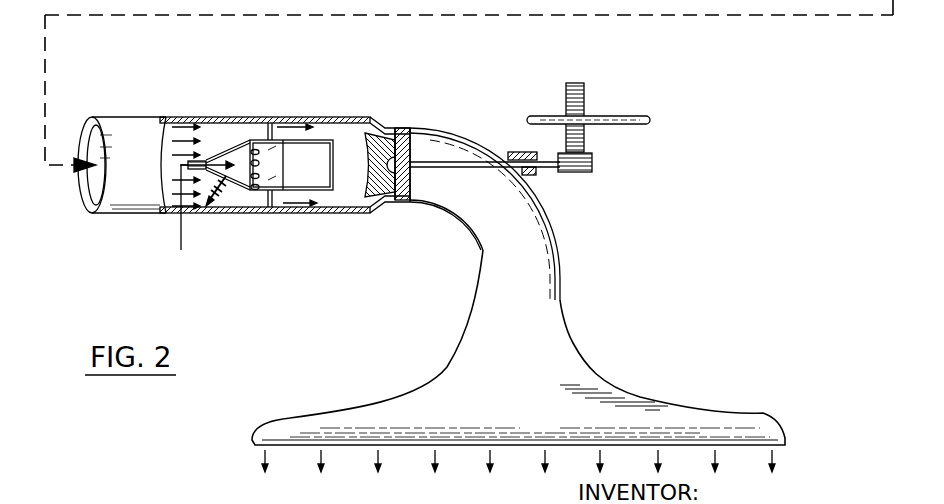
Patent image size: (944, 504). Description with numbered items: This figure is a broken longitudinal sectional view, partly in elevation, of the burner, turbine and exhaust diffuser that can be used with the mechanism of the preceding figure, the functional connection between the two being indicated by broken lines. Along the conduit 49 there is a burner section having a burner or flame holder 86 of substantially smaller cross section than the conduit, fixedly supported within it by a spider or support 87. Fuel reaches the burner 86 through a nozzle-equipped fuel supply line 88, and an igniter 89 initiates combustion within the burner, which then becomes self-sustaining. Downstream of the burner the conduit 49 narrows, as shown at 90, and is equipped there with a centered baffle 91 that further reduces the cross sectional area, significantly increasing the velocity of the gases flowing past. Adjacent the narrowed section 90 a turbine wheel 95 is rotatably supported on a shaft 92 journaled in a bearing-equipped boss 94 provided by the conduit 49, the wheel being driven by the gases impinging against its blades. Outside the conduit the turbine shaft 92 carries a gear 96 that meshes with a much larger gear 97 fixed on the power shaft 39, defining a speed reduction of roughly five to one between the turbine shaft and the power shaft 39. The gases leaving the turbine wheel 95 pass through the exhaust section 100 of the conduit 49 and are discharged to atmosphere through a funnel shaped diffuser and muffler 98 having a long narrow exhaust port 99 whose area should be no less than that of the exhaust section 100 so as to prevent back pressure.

The power shaft 39 is at (540, 117).
The conduit 49 is at (125, 130).
The burner 86 is at (233, 140).
The spider 87 is at (270, 124).
The fuel supply line 88 is at (181, 238).
The igniter 89 is at (222, 198).
The narrowed section 90 is at (400, 128).
The centered baffle 91 is at (380, 210).
The turbine shaft 92 is at (468, 136).
The bearing-equipped boss 94 is at (538, 172).
The turbine wheel 95 is at (410, 130).
The gear 96 is at (592, 166).
The gear 97 is at (586, 100).
The diffuser and muffler 98 is at (607, 380).
The exhaust port 99 is at (410, 448).
The exhaust section 100 is at (556, 250).